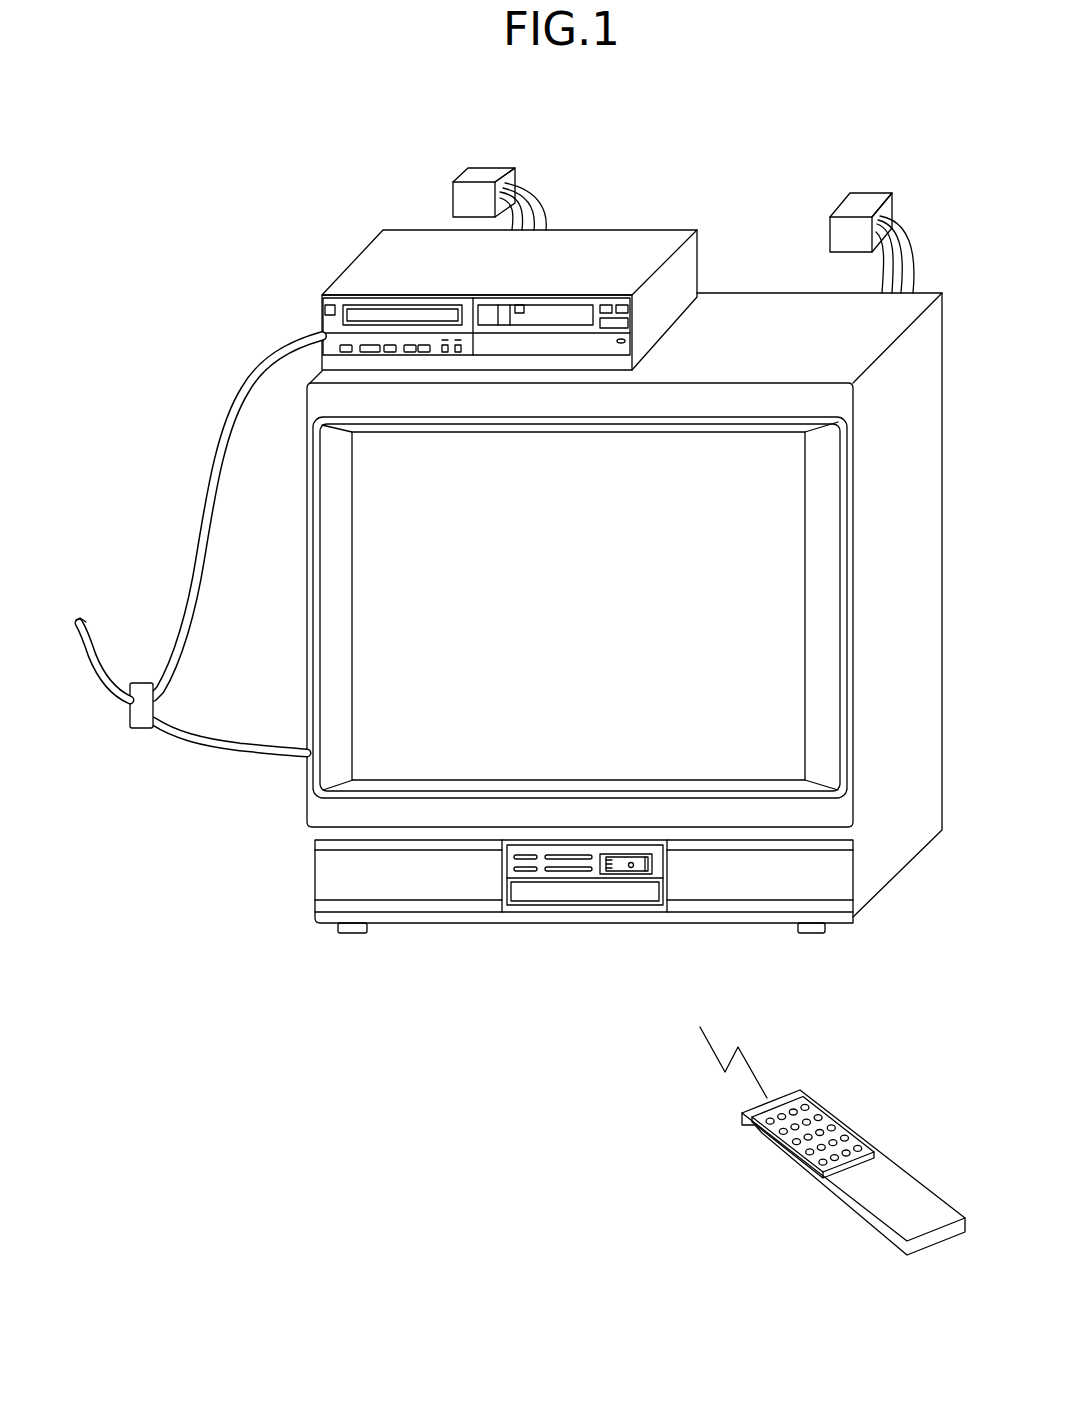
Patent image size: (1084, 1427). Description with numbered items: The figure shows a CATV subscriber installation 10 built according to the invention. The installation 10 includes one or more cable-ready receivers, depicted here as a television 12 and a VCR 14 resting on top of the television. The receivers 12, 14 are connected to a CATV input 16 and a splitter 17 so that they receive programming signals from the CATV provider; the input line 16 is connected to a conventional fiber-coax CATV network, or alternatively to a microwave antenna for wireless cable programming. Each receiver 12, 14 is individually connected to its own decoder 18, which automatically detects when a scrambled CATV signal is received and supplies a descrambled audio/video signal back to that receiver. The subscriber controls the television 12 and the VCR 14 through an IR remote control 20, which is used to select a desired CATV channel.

The CATV subscriber installation 10 is at (205, 410).
The television 12 is at (785, 677).
The VCR 14 is at (320, 311).
The CATV input 16 is at (98, 647).
The splitter 17 is at (157, 707).
The decoder 18 is at (497, 166).
The IR remote control 20 is at (823, 1110).